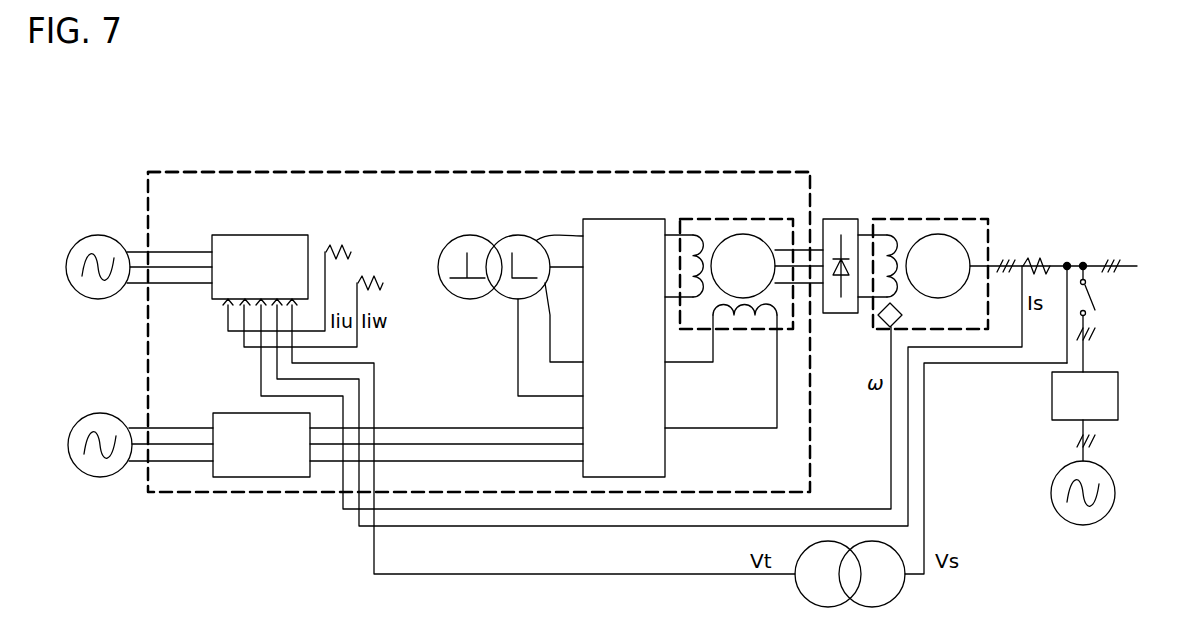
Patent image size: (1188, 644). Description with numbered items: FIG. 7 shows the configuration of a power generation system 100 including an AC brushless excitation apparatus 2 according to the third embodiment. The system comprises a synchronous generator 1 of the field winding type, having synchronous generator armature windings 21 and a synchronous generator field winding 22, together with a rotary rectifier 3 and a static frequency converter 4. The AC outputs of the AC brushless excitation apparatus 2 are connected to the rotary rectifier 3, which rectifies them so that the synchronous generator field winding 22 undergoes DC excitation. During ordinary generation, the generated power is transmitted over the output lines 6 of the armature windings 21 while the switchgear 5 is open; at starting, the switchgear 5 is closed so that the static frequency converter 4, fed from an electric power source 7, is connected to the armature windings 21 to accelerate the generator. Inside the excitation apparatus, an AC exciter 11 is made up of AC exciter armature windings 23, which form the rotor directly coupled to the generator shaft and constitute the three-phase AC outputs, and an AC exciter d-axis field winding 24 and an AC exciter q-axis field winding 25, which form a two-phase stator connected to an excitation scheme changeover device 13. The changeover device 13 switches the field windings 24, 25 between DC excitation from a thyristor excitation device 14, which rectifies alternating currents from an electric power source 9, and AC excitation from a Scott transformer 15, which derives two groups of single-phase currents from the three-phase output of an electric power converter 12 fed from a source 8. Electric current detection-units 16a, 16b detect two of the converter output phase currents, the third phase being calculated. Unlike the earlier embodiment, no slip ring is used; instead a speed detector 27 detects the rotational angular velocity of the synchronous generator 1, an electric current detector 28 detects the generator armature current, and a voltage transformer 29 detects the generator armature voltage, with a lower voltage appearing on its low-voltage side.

The power generation system 100 is at (200, 137).
The AC brushless excitation apparatus 2 is at (553, 172).
The AC power source 8 is at (100, 300).
The electric power source 9 is at (112, 413).
The electric power converter 12 is at (250, 235).
The electric current detection-unit 16a is at (345, 252).
The electric current detection-unit 16b is at (378, 283).
The Scott transformer 15 is at (488, 237).
The excitation scheme changeover device 13 is at (616, 219).
The thyristor excitation device 14 is at (228, 413).
The AC exciter 11 is at (713, 218).
The AC exciter d-axis field winding 24 is at (693, 233).
The AC exciter armature windings 23 is at (760, 240).
The AC exciter q-axis field winding 25 is at (777, 315).
The rotary rectifier 3 is at (837, 218).
The synchronous generator 1 is at (950, 218).
The synchronous generator field winding 22 is at (887, 237).
The synchronous generator armature windings 21 is at (937, 233).
The speed detector 27 is at (887, 323).
The output lines 6 is at (1137, 266).
The electric current detector 28 is at (1038, 258).
The switchgear 5 is at (1097, 297).
The static frequency converter 4 is at (1067, 420).
The electric power source 7 is at (1055, 477).
The voltage transformer 29 is at (903, 592).